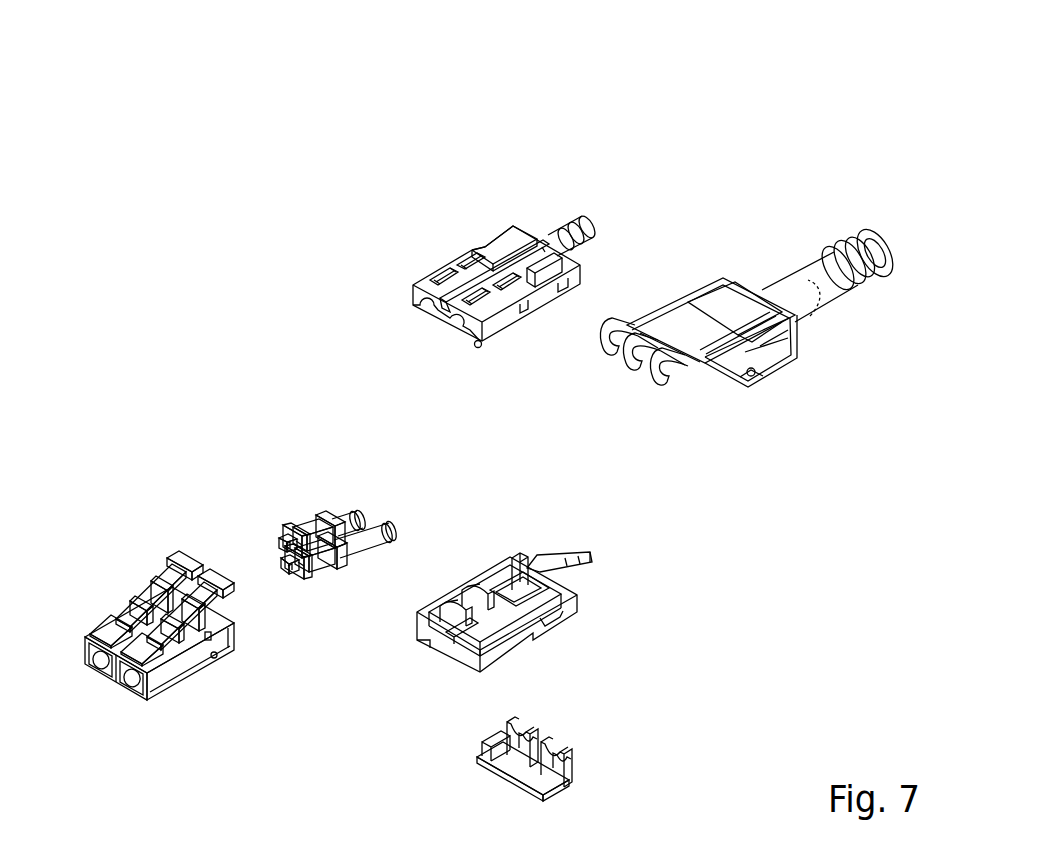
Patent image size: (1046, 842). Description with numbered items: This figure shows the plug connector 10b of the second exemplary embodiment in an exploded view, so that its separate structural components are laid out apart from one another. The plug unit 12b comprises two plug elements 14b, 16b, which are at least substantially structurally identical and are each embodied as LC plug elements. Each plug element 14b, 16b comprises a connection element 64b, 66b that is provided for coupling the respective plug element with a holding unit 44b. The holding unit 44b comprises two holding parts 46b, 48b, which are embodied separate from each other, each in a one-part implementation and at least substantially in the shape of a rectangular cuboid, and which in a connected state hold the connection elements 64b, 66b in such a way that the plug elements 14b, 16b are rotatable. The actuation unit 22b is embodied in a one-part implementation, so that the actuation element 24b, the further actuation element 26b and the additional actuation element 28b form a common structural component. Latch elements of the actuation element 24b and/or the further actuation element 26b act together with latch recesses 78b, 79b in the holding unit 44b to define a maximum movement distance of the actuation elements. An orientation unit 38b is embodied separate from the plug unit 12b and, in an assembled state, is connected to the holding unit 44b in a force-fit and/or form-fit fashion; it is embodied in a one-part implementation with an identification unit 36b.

The fiber optic connector 10b is at (557, 106).
The plug unit 12b is at (216, 426).
The plug element 14b is at (186, 690).
The plug element 16b is at (116, 582).
The actuation unit 22b is at (812, 228).
The actuation element 24b is at (682, 288).
The further actuation element 26b is at (698, 263).
The additional actuation element 28b is at (788, 268).
The identification unit 36b is at (555, 730).
The orientation unit 38b is at (580, 752).
The holding unit 44b is at (433, 236).
The holding part 46b is at (425, 645).
The holding part 48b is at (415, 292).
The connection element 64b is at (390, 540).
The connection element 66b is at (345, 525).
The latch recess 78b is at (548, 296).
The latch recess 79b is at (493, 238).